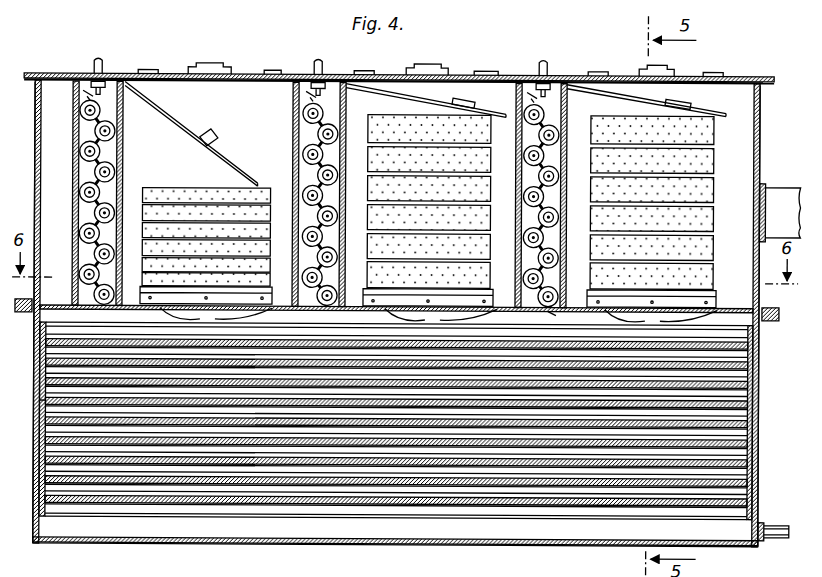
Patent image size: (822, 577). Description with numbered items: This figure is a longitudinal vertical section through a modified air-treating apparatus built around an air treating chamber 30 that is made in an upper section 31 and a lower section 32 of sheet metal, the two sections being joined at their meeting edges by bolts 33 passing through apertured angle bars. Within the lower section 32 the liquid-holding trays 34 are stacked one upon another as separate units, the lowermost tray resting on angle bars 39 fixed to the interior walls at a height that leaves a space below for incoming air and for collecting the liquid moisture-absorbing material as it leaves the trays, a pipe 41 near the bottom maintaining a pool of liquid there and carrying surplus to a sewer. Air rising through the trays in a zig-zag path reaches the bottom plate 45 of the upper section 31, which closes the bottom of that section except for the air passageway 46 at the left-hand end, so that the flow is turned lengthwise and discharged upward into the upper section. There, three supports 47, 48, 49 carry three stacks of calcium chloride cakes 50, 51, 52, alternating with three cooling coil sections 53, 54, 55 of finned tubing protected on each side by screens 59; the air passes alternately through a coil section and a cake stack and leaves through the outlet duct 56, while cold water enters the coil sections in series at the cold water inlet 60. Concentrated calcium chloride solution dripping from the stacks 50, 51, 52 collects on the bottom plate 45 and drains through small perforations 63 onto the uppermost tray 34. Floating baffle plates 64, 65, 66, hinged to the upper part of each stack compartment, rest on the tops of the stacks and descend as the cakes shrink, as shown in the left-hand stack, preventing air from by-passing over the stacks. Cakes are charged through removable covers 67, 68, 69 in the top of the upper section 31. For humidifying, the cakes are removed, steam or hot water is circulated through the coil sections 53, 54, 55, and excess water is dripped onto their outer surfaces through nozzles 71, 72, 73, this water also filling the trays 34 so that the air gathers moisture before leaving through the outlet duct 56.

The air treating chamber 30 is at (760, 345).
The upper section 31 is at (35, 186).
The lower section 32 is at (40, 400).
The bolts 33 is at (33, 312).
The liquid-holding trays 34 is at (283, 450).
The angle bars 39 is at (132, 514).
The pipe 41 is at (768, 537).
The bottom plate 45 is at (718, 307).
The air passageway 46 is at (44, 336).
The support 47 is at (272, 292).
The support 48 is at (494, 293).
The support 49 is at (716, 293).
The stack of calcium chloride cakes 50 is at (207, 230).
The stack of calcium chloride cakes 51 is at (420, 128).
The stack of calcium chloride cakes 52 is at (628, 150).
The cooling coil section 53 is at (84, 86).
The cooling coil section 54 is at (306, 98).
The cooling coil section 55 is at (532, 98).
The outlet duct 56 is at (778, 192).
The screens 59 is at (73, 150).
The cold water inlet 60 is at (548, 311).
The perforations 63 is at (438, 322).
The floating baffle plate 64 is at (183, 128).
The floating baffle plate 65 is at (472, 109).
The floating baffle plate 66 is at (707, 106).
The removable cover 67 is at (170, 72).
The removable cover 68 is at (383, 72).
The removable cover 69 is at (683, 72).
The nozzle 71 is at (104, 58).
The nozzle 72 is at (318, 58).
The nozzle 73 is at (545, 58).